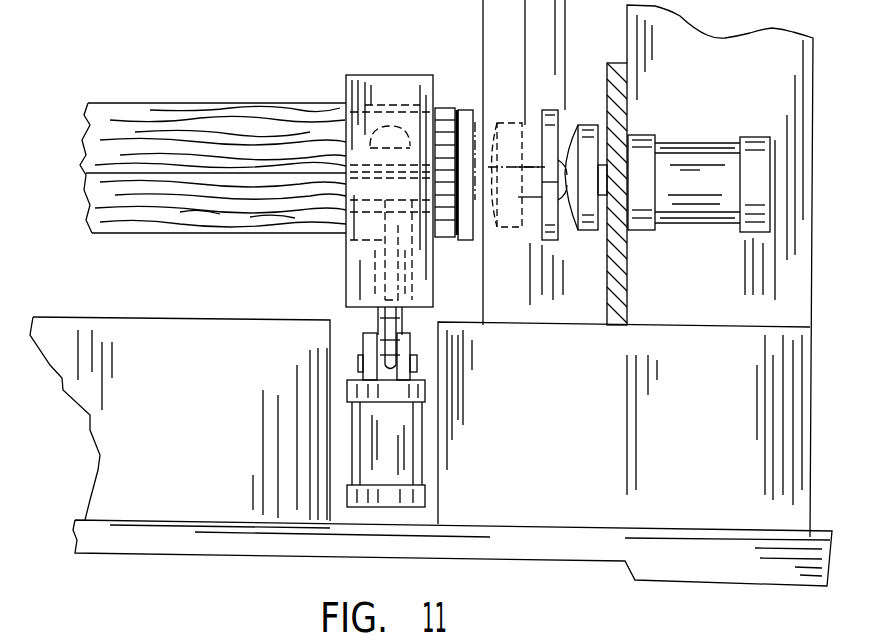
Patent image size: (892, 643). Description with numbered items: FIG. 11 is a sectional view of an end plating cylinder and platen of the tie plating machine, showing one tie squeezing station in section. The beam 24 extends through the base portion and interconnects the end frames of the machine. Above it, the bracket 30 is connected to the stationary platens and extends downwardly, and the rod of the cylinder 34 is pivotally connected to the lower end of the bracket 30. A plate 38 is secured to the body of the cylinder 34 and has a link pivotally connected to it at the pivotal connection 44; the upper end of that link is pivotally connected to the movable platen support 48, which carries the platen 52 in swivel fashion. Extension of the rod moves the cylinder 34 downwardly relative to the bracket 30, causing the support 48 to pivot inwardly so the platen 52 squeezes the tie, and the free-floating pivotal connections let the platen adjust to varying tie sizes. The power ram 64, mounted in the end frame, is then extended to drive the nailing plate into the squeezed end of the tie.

The beam 24 is at (145, 315).
The bracket 30 is at (390, 322).
The cylinder 34 is at (378, 447).
The plate 38 is at (368, 335).
The pivotal connection 44 is at (417, 362).
The movable platen support 48 is at (378, 102).
The platen 52 is at (438, 125).
The power ram 64 is at (697, 153).